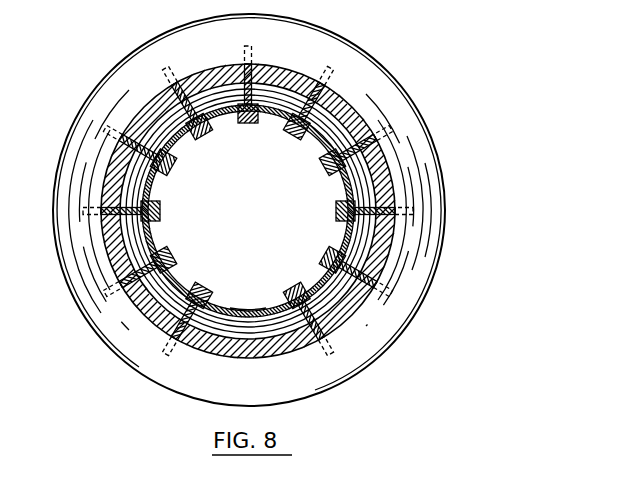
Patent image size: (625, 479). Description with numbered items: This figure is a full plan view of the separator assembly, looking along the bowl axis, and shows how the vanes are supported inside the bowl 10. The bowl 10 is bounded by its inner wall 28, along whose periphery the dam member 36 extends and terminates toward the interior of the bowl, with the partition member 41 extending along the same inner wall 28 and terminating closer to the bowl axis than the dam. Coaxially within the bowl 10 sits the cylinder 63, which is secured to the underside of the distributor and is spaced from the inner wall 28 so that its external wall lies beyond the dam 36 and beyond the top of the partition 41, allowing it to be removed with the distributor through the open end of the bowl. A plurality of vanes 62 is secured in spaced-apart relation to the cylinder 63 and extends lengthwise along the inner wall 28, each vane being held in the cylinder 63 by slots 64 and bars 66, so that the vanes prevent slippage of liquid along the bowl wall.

The bowl 10 is at (386, 172).
The inner wall 28 is at (320, 120).
The dam member 36 is at (340, 262).
The partition member 41 is at (330, 298).
The vanes 62 is at (330, 67).
The cylinder 63 is at (348, 177).
The slots 64 is at (243, 313).
The bars 66 is at (352, 214).